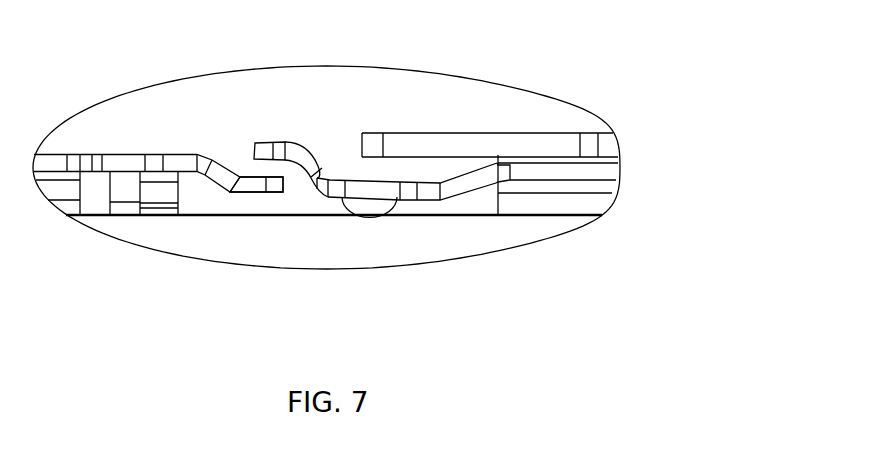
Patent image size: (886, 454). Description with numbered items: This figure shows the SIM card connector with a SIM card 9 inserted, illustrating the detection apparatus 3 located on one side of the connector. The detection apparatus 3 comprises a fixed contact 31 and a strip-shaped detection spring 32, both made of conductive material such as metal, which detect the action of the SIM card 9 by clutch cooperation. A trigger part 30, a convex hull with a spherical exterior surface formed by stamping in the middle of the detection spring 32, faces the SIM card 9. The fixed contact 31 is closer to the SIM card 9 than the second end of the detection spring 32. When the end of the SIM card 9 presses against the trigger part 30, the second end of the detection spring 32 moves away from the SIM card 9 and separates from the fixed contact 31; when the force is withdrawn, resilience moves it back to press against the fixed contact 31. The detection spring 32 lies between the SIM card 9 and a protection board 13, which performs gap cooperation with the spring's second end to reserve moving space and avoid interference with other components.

The detection apparatus 3 is at (204, 114).
The SIM card 9 is at (317, 249).
The protection board 13 is at (468, 138).
The trigger part 30 is at (373, 210).
The fixed contact 31 is at (255, 187).
The detection spring 32 is at (373, 187).